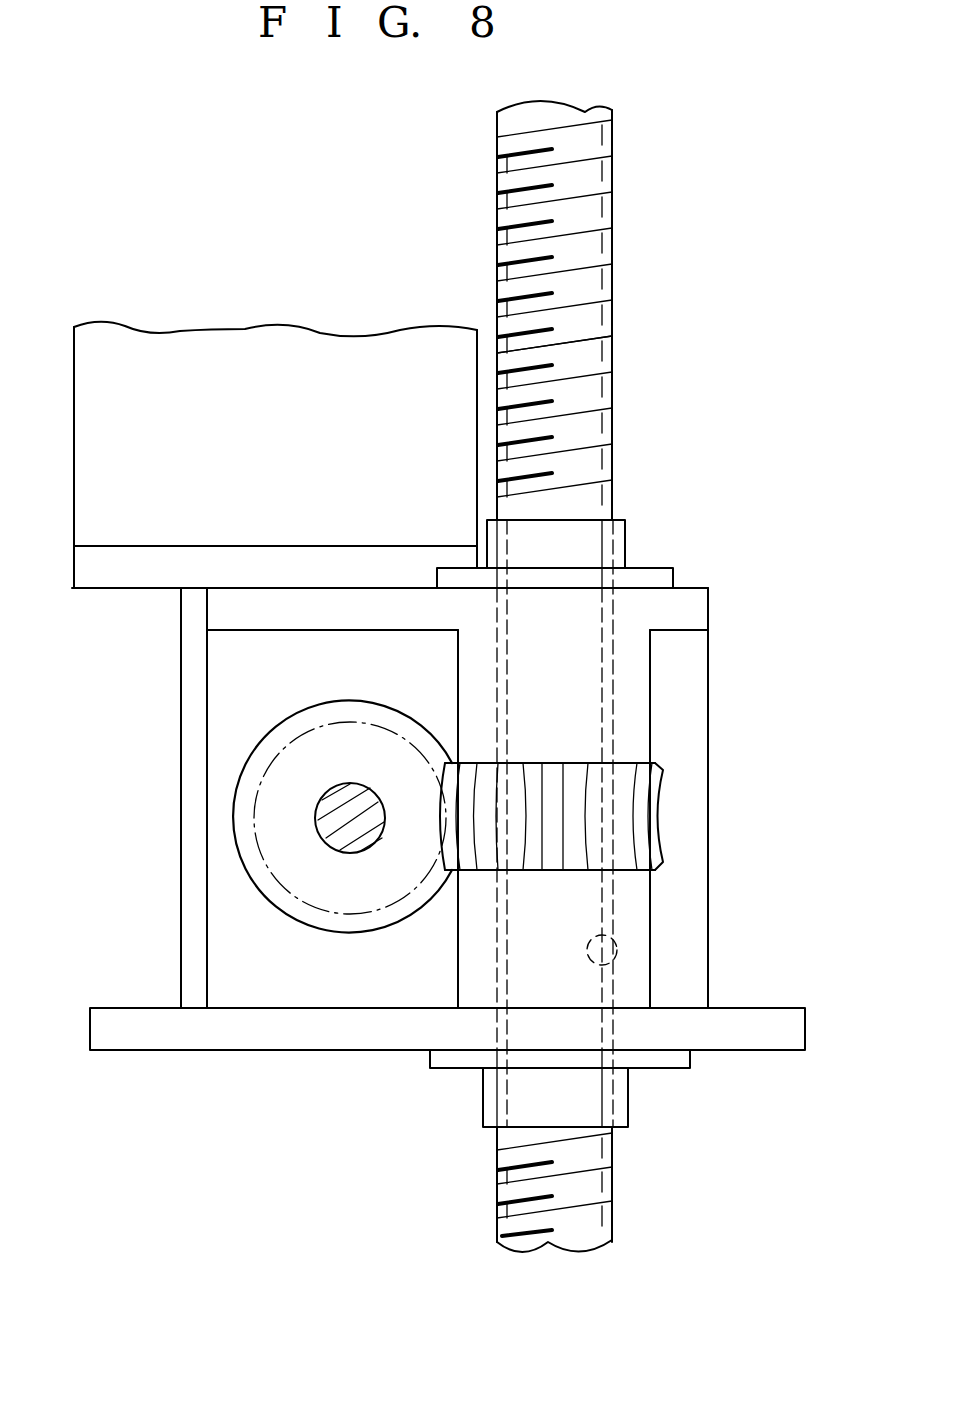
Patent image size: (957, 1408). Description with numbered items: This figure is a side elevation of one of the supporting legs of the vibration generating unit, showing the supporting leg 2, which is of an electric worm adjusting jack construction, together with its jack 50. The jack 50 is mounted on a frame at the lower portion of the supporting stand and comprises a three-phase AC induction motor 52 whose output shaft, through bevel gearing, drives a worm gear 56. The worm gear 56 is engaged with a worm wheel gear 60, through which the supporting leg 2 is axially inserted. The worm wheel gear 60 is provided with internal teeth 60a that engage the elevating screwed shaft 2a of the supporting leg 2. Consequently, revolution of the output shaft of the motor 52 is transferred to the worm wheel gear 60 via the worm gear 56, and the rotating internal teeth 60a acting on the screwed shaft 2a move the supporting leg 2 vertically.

The supporting leg 2 is at (596, 249).
The elevating screwed shaft 2a is at (608, 356).
The jack 50 is at (673, 697).
The 3-phase AC induction motor 52 is at (208, 345).
The worm gear 56 is at (265, 813).
The worm wheel gear 60 is at (636, 820).
The internal teeth 60a is at (612, 949).